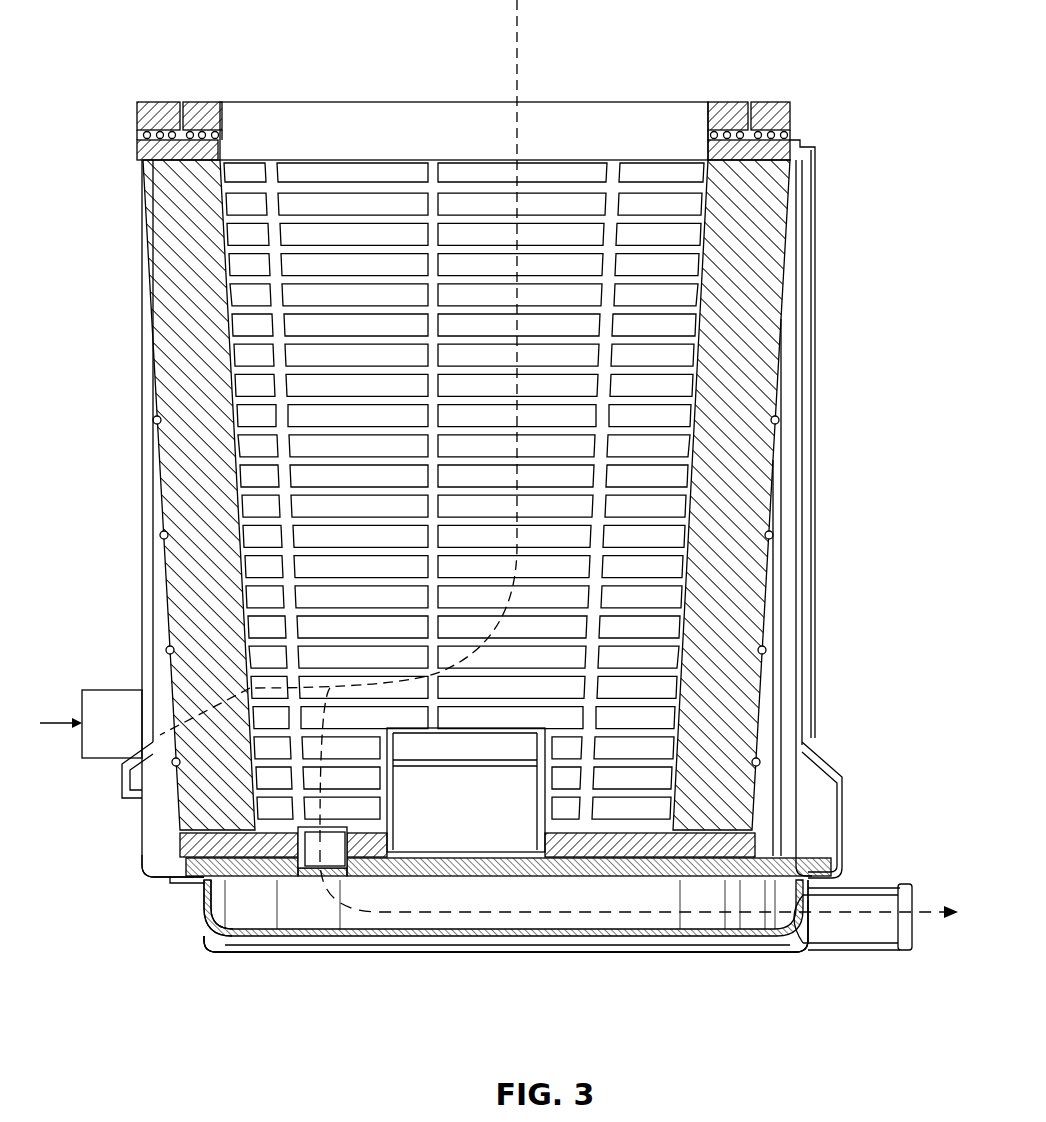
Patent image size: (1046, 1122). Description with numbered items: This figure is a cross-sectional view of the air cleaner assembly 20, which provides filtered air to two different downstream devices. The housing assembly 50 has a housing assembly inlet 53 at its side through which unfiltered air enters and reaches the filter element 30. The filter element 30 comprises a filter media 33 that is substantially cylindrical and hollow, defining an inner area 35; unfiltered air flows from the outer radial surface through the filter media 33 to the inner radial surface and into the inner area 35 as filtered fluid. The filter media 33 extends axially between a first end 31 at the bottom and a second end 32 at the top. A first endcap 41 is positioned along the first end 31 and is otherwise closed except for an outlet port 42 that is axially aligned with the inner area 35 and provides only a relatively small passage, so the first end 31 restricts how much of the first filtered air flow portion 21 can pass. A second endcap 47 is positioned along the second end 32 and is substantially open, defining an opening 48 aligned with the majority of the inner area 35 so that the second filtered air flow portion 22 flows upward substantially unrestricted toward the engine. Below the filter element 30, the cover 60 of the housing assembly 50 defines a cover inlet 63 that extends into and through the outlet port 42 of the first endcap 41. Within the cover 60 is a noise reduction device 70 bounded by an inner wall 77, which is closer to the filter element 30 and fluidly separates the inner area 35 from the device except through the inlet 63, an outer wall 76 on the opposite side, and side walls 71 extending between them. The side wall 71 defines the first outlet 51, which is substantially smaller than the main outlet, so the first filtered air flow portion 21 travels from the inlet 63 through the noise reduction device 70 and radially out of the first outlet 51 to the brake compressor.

The air cleaner assembly 20 is at (825, 28).
The first filtered air flow portion 21 is at (922, 914).
The second filtered air flow portion 22 is at (517, 32).
The filter element 30 is at (762, 697).
The first end 31 is at (205, 880).
The second end 32 is at (164, 136).
The filter media 33 is at (170, 618).
The inner area 35 is at (325, 235).
The first endcap 41 is at (178, 846).
The outlet port 42 is at (262, 852).
The second endcap 47 is at (793, 135).
The opening 48 is at (655, 118).
The housing assembly 50 is at (665, 958).
The cover 60 is at (665, 958).
The first outlet 51 is at (864, 952).
The housing assembly inlet 53 is at (105, 690).
The cover inlet 63 is at (322, 840).
The noise reduction device 70 is at (388, 940).
The side wall 71 is at (205, 897).
The outer wall 76 is at (542, 936).
The inner wall 77 is at (592, 876).